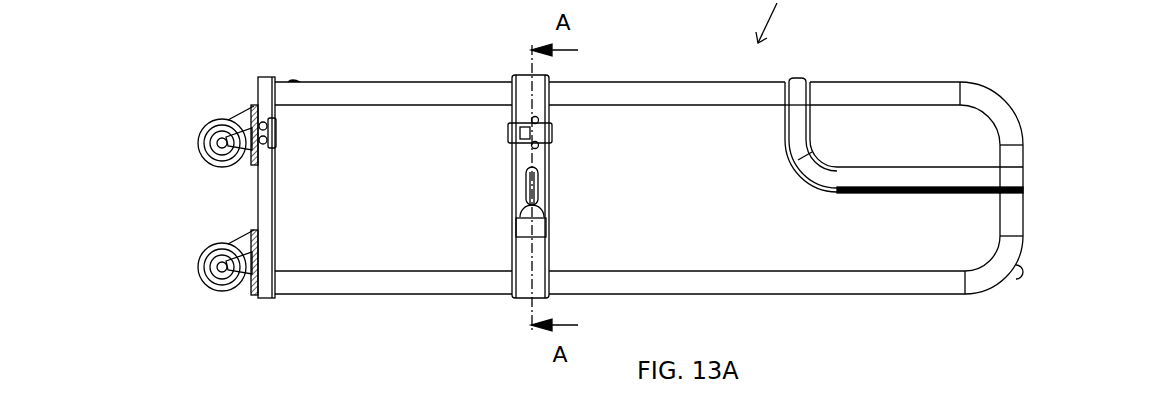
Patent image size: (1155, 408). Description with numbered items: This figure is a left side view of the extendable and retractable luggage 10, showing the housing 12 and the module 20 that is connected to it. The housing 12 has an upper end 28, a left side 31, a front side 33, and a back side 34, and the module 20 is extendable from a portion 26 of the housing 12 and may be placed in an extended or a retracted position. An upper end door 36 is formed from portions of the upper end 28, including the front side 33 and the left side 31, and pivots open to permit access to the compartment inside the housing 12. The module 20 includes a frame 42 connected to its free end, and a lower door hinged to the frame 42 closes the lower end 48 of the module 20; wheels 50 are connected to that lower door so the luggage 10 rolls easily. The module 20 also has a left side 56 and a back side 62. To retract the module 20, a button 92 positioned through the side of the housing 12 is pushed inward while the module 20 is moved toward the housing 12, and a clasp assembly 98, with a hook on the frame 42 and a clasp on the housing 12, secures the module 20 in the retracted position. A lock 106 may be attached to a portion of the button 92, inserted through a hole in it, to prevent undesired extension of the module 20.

The extendable and retractable luggage 10 is at (1065, 182).
The housing 12 is at (700, 95).
The module 20 is at (404, 95).
The portion of the housing 26 is at (518, 92).
The upper end 28 is at (1020, 220).
The left side 31 is at (715, 216).
The front side 33 is at (635, 80).
The back side 34 is at (865, 296).
The upper end door 36 is at (897, 98).
The frame 42 is at (272, 290).
The lower end of the module 48 is at (257, 192).
The wheels 50 is at (197, 144).
The left side of the module 56 is at (393, 194).
The back side of the module 62 is at (399, 290).
The button 92 is at (540, 186).
The clasp assembly 98 is at (552, 135).
The lock 106 is at (513, 227).